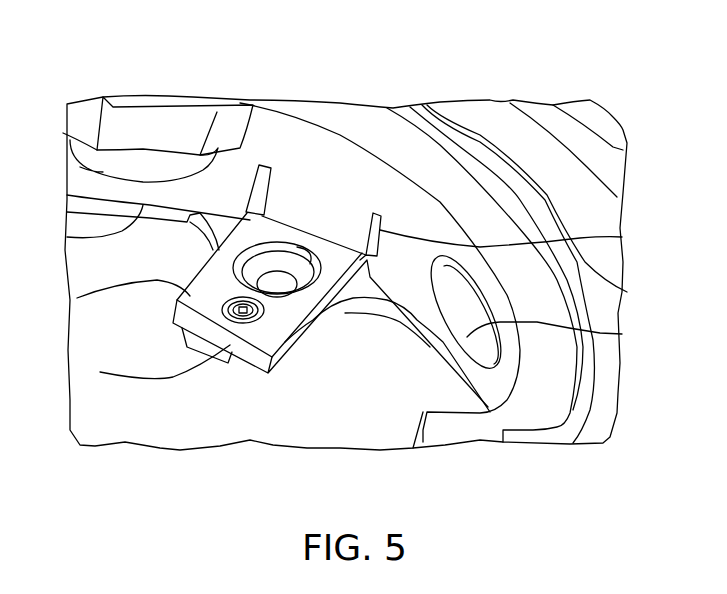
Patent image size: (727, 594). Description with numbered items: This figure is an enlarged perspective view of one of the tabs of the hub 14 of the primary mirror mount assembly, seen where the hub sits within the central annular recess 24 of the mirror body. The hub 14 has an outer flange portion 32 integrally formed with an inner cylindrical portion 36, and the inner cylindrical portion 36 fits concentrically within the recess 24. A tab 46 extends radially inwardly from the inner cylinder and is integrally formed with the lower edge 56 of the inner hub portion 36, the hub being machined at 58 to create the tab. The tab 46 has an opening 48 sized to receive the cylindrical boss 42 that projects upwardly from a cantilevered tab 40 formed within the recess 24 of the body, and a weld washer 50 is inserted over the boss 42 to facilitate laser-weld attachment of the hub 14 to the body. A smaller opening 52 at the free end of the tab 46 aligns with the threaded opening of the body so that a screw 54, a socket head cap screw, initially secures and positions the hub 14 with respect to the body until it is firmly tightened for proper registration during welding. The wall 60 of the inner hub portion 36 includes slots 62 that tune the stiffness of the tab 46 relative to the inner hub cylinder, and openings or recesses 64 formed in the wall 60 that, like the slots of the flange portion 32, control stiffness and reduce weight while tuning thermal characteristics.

The hub 14 is at (603, 128).
The central annular recess 24 is at (97, 410).
The outer flange portion 32 is at (597, 418).
The inner cylindrical portion 36 is at (390, 127).
The cantilevered tab 40 is at (351, 296).
The cylindrical boss 42 is at (247, 213).
The tab 46 is at (77, 298).
The opening 48 is at (345, 228).
The weld washer 50 is at (288, 262).
The smaller opening 52 is at (100, 372).
The screw 54 is at (243, 318).
The lower edge 56 is at (67, 237).
The machined region 58 is at (265, 283).
The wall 60 is at (622, 237).
The slot 62 is at (260, 252).
The opening 64 is at (80, 165).